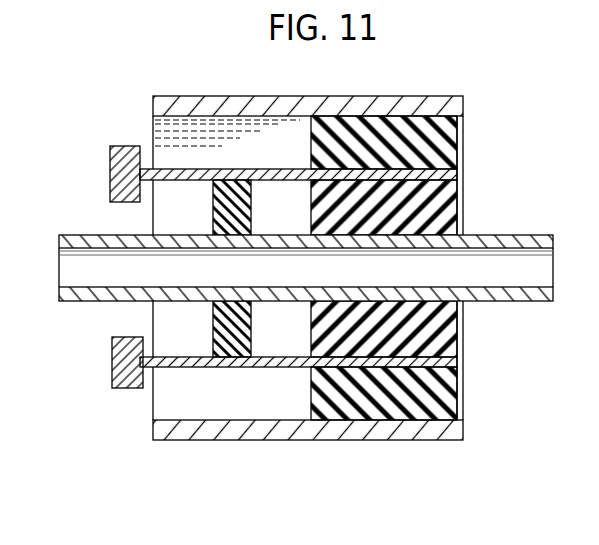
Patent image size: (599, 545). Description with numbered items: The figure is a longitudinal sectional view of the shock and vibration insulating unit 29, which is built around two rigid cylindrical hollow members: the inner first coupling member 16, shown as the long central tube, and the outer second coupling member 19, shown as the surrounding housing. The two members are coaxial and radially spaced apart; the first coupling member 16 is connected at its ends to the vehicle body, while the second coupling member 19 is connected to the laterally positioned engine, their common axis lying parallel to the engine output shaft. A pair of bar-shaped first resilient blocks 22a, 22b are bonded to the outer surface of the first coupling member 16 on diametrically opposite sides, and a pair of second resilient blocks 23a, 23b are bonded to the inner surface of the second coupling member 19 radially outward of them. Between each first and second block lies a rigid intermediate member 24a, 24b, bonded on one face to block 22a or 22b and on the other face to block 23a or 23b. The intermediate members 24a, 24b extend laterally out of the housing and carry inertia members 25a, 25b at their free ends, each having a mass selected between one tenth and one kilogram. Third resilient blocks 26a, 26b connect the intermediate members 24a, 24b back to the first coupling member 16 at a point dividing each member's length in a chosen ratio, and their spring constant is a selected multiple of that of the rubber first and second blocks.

The shock and vibration insulating unit 29 is at (314, 92).
The second coupling member 19 is at (265, 440).
The first coupling member 16 is at (90, 235).
The second resilient block 23a is at (463, 143).
The second resilient block 23b is at (463, 392).
The first resilient block 22a is at (463, 203).
The first resilient block 22b is at (463, 328).
The intermediate member 24a is at (260, 169).
The intermediate member 24b is at (240, 367).
The inertia member 25a is at (110, 173).
The inertia member 25b is at (112, 362).
The third resilient block 26a is at (213, 185).
The third resilient block 26b is at (213, 313).